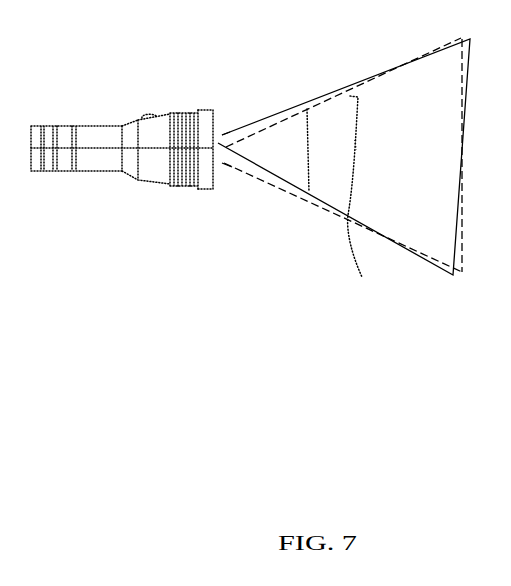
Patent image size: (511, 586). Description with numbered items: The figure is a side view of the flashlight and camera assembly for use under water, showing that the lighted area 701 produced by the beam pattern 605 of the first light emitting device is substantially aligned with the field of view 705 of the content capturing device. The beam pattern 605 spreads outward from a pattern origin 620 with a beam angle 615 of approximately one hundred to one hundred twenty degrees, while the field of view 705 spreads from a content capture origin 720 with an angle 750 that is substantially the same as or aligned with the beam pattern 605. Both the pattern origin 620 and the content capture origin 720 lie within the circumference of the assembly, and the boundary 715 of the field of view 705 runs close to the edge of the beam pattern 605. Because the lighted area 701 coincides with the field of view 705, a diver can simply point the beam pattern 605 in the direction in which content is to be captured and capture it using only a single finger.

The beam pattern 605 is at (343, 88).
The lighted area 701 is at (408, 97).
The field of view 705 is at (362, 277).
The beam angle 615 is at (308, 146).
The angle of the field of view 750 is at (356, 143).
The pattern origin 620 is at (222, 135).
The content capture origin 720 is at (222, 163).
The boundary of offset field of view 715 is at (275, 192).